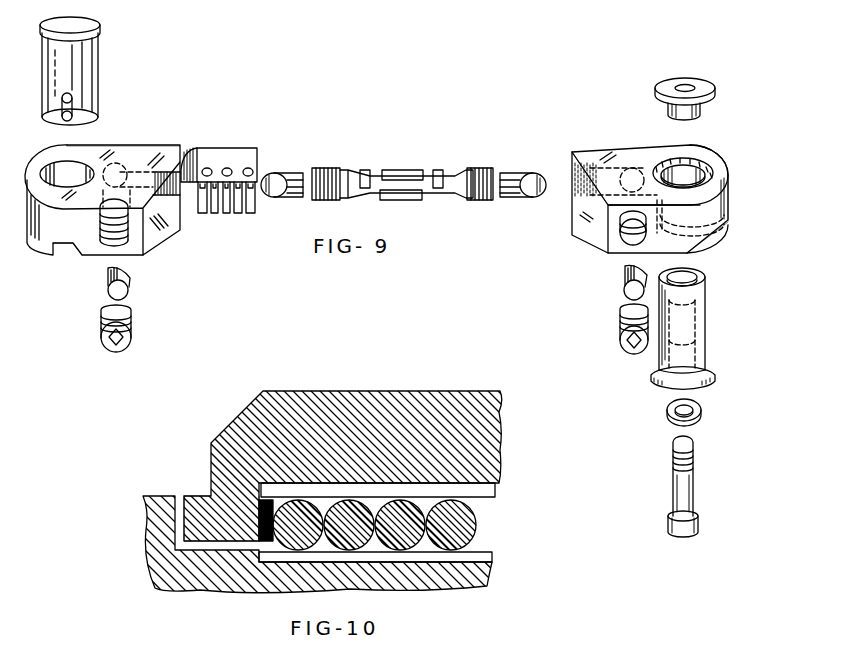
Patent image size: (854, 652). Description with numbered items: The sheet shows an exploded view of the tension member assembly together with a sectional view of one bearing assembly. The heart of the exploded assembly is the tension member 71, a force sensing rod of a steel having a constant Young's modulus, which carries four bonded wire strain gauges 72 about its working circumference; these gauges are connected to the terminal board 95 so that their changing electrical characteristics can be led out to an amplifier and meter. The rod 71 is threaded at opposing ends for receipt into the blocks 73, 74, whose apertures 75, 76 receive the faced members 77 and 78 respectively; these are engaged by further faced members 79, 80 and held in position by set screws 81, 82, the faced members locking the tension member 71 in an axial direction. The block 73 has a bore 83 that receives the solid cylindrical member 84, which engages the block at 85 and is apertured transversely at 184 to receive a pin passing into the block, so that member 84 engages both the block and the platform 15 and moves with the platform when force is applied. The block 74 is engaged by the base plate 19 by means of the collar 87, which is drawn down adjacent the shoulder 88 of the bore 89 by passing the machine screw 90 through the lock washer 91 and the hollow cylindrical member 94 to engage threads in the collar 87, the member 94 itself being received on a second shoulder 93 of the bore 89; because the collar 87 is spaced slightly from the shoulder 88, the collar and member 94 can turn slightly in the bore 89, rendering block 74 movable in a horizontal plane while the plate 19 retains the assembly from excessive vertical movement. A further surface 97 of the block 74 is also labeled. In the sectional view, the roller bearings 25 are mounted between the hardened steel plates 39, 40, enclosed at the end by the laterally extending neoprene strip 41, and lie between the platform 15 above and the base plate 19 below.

In FIG. 9, the solid cylindrical member 84 is at (100, 64).
In FIG. 9, the transverse aperture 184 is at (97, 113).
In FIG. 9, the bore 83 is at (60, 166).
In FIG. 9, the block 73 is at (160, 158).
In FIG. 9, the aperture 75 is at (150, 178).
In FIG. 9, the terminal board 95 is at (240, 166).
In FIG. 9, the engagement point 85 is at (65, 246).
In FIG. 9, the faced member 79 is at (130, 292).
In FIG. 9, the set screw 81 is at (132, 342).
In FIG. 9, the faced member 77 is at (303, 176).
In FIG. 9, the faced member 78 is at (515, 173).
In FIG. 9, the tension member 71 is at (440, 172).
In FIG. 9, the bonded wire strain gauges 72 is at (388, 170).
In FIG. 9, the collar 87 is at (716, 90).
In FIG. 9, the block 74 is at (581, 158).
In FIG. 9, the aperture 76 is at (660, 146).
In FIG. 9, the shoulder 88 is at (705, 165).
In FIG. 9, the bore 89 is at (712, 178).
In FIG. 9, the boss 97 is at (728, 215).
In FIG. 9, the shoulder 93 is at (728, 232).
In FIG. 9, the faced member 80 is at (624, 292).
In FIG. 9, the set screw 82 is at (620, 344).
In FIG. 9, the hollow cylindrical member 94 is at (657, 386).
In FIG. 9, the lock washer 91 is at (700, 413).
In FIG. 9, the machine screw 90 is at (694, 463).
In FIG. 10, the platform 15 is at (487, 446).
In FIG. 10, the neoprene strip 41 is at (211, 466).
In FIG. 10, the hardened steel plate 39 is at (488, 491).
In FIG. 10, the roller bearings 25 is at (468, 525).
In FIG. 10, the hardened steel plate 40 is at (490, 558).
In FIG. 10, the base plate 19 is at (476, 575).